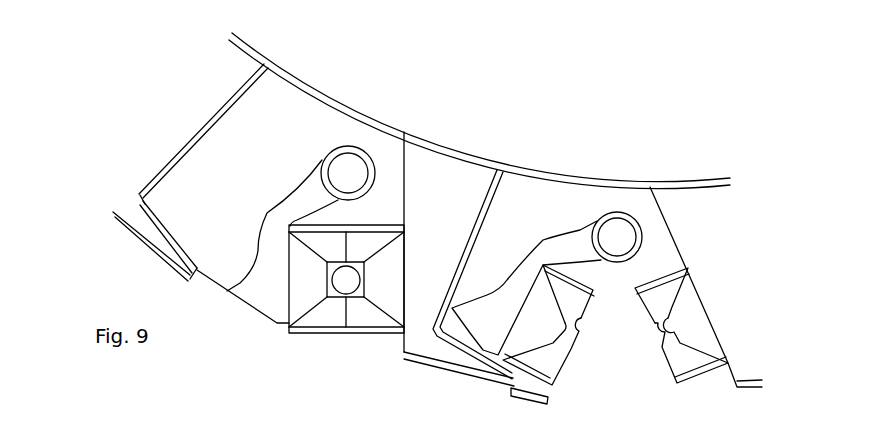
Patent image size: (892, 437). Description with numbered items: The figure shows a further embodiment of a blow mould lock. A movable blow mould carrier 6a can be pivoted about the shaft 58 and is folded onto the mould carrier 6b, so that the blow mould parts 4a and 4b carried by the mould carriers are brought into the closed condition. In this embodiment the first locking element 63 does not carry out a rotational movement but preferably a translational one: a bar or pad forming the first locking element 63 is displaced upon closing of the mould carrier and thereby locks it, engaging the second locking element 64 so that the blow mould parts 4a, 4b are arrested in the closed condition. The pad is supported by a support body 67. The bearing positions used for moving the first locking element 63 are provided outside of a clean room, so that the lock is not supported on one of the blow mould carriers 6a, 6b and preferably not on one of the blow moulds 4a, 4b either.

The blow mould part 4a is at (298, 218).
The blow mould part 4b is at (390, 258).
The movable blow mould carrier 6a is at (267, 262).
The mould carrier 6b is at (723, 262).
The shaft 58 is at (350, 178).
The first locking element 63 is at (207, 283).
The second locking element 64 is at (262, 293).
The support body 67 is at (153, 232).